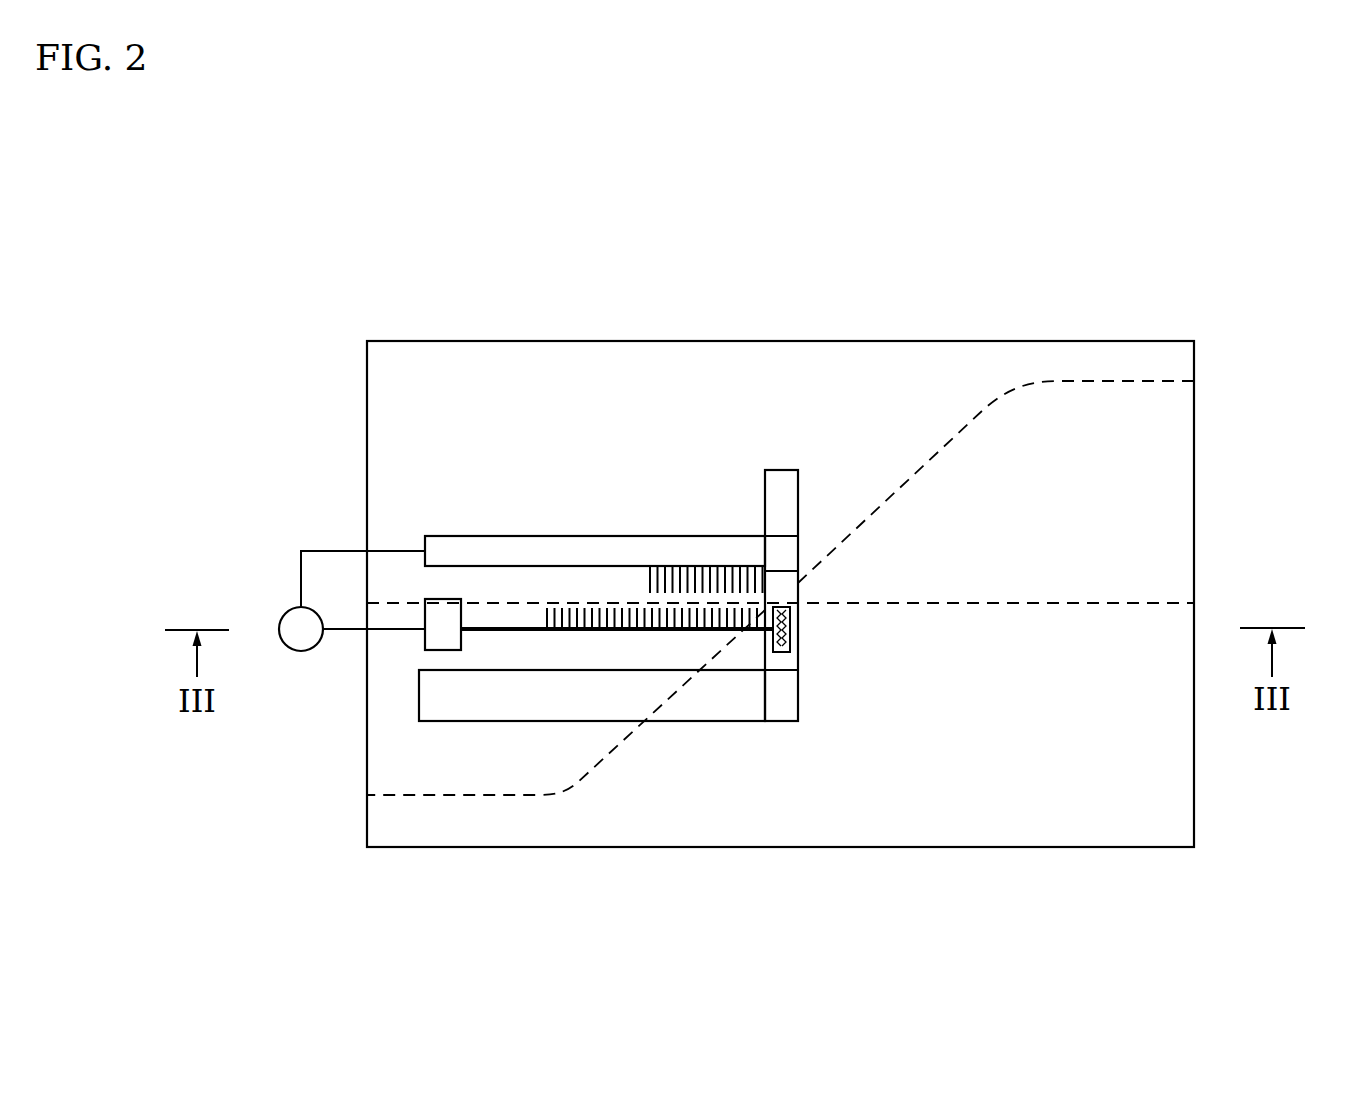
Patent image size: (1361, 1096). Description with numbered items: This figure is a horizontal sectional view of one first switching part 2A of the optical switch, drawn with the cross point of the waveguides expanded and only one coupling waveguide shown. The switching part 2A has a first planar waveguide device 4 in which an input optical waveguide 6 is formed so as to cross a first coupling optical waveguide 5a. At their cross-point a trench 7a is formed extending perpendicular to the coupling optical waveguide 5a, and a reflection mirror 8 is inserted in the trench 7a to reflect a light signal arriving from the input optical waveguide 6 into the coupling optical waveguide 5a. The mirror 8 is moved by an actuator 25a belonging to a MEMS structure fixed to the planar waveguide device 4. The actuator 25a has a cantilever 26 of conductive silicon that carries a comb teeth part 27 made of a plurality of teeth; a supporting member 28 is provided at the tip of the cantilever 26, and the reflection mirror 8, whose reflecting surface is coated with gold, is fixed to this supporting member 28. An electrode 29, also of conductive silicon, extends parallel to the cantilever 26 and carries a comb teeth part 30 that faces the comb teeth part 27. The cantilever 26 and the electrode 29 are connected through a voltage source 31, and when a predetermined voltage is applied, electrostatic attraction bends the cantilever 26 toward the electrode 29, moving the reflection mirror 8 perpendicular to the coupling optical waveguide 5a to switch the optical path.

The first switching part 2A is at (1020, 202).
The first planar waveguide device 4 is at (745, 358).
The input optical waveguide 6 is at (1119, 378).
The first coupling optical waveguide 5a is at (1135, 602).
The trench 7a is at (772, 497).
The electrode 29 is at (475, 550).
The comb teeth part 30 is at (648, 577).
The actuator 25a is at (714, 752).
The cantilever 26 is at (493, 632).
The comb teeth part 27 is at (547, 612).
The reflection mirror 8 is at (790, 628).
The supporting member 28 is at (788, 643).
The voltage source 31 is at (301, 651).